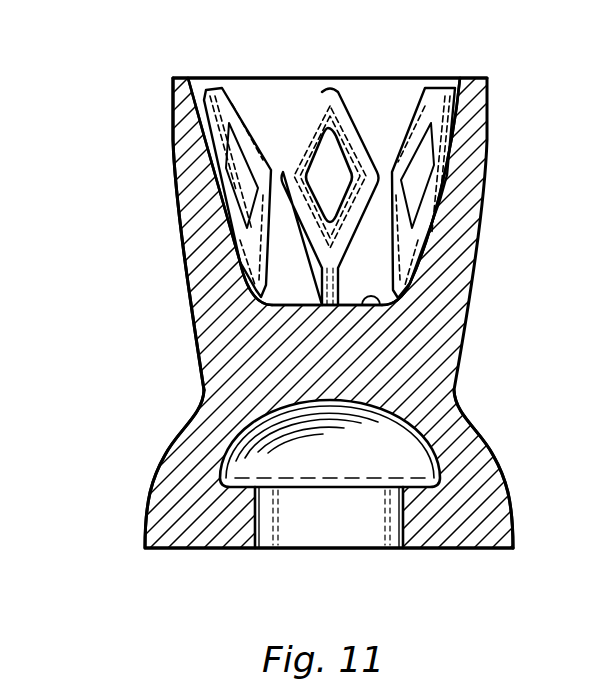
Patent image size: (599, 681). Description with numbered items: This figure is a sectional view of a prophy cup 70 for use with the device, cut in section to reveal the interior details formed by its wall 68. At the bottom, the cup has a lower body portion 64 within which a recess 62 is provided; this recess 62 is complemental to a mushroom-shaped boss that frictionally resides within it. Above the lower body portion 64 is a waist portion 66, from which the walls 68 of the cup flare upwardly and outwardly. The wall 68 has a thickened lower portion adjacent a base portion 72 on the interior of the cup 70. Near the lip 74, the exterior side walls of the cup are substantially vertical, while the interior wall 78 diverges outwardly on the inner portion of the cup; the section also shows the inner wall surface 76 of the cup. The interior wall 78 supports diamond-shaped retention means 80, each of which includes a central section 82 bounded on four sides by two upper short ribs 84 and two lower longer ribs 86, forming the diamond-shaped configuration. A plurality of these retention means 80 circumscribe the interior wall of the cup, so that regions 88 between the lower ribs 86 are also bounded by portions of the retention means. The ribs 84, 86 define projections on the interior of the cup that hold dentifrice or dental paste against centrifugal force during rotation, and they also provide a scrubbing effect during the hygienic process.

The recess 62 is at (332, 533).
The lower body portion 64 is at (172, 505).
The waist portion 66 is at (430, 382).
The wall 68 is at (183, 218).
The prophy cup 70 is at (122, 152).
The base portion 72 is at (392, 308).
The lip 74 is at (181, 77).
The inner wall 76 is at (183, 100).
The interior wall 78 is at (208, 78).
The diamond-shaped retention means 80 is at (343, 84).
The central section 82 is at (336, 150).
The upper short ribs 84 is at (412, 132).
The lower longer ribs 86 is at (410, 215).
The regions 88 is at (303, 281).